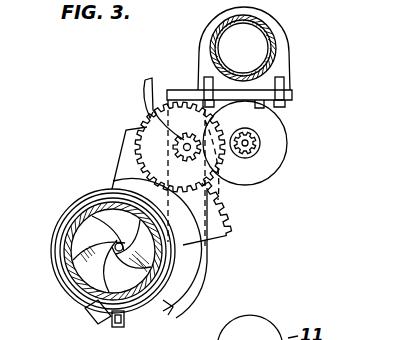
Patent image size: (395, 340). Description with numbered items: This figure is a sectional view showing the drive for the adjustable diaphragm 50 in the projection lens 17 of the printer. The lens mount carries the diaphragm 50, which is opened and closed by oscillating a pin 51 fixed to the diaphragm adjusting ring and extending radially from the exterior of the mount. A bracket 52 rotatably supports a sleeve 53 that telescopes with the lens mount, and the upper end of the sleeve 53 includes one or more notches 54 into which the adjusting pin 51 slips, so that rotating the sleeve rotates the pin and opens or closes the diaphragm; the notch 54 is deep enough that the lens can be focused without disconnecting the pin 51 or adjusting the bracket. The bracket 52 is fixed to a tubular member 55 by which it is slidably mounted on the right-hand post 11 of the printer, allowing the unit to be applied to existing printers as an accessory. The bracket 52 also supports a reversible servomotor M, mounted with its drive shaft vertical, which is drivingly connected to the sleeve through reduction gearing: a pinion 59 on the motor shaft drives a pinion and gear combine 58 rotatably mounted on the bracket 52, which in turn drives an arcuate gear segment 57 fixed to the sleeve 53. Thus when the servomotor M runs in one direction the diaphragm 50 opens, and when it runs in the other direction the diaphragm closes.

The post 11 is at (272, 35).
The tubular member 55 is at (280, 63).
The servomotor M is at (268, 174).
The pinion 59 is at (256, 143).
The arcuate gear segment 57 is at (126, 130).
The pinion and gear combine 58 is at (147, 80).
The bracket 52 is at (207, 264).
The sleeve 53 is at (78, 208).
The adjustable diaphragm 50 is at (73, 237).
The projection lens 17 is at (92, 263).
The notch 54 is at (100, 314).
The pin 51 is at (122, 327).